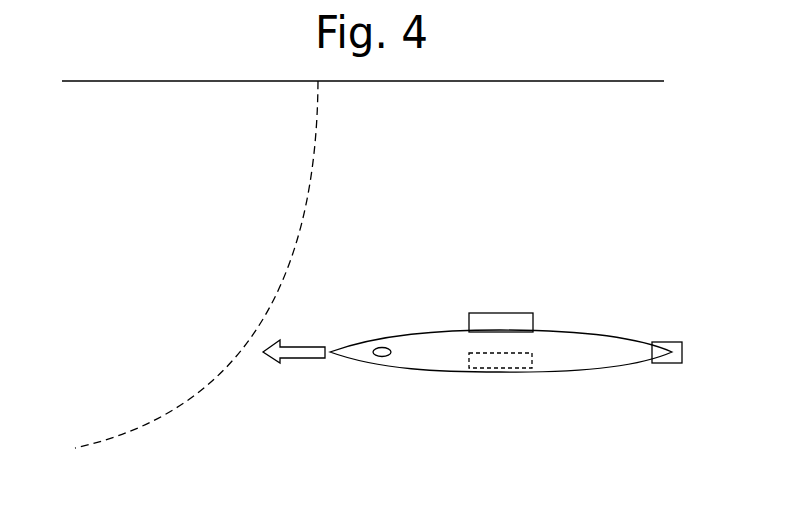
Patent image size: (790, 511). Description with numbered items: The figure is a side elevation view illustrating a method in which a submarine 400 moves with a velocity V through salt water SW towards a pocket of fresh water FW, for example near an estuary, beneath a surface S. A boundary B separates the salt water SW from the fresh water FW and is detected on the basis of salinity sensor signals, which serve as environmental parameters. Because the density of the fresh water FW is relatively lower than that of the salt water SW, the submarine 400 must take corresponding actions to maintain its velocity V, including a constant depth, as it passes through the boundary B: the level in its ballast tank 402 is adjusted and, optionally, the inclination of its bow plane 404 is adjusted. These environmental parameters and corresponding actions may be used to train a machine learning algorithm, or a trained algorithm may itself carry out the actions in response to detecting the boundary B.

The surface S is at (558, 81).
The salt water SW is at (514, 215).
The fresh water FW is at (153, 245).
The boundary B is at (163, 422).
The velocity V is at (307, 347).
The submarine 400 is at (428, 327).
The ballast tank 402 is at (513, 368).
The bow plane 404 is at (382, 357).